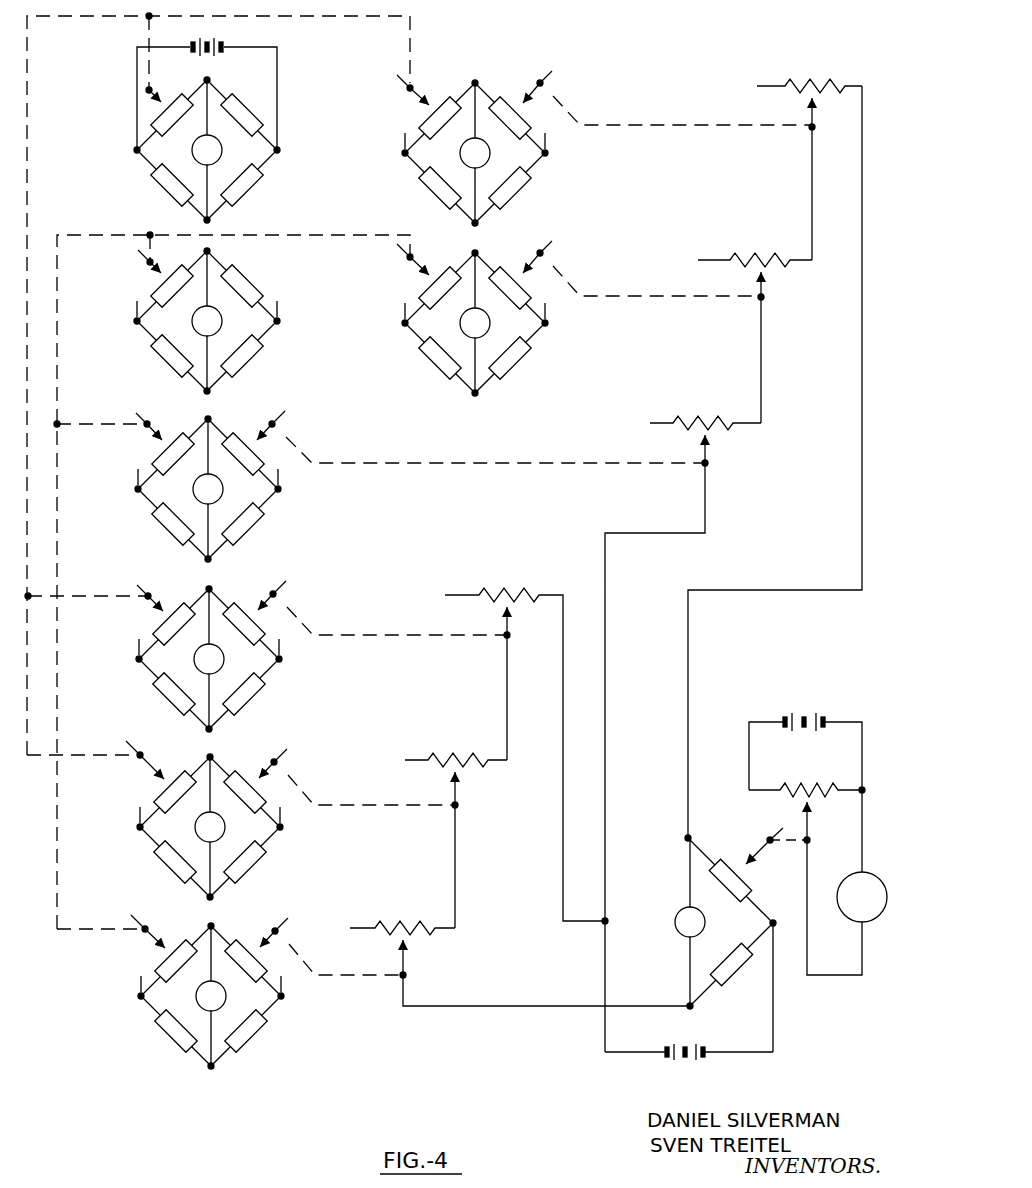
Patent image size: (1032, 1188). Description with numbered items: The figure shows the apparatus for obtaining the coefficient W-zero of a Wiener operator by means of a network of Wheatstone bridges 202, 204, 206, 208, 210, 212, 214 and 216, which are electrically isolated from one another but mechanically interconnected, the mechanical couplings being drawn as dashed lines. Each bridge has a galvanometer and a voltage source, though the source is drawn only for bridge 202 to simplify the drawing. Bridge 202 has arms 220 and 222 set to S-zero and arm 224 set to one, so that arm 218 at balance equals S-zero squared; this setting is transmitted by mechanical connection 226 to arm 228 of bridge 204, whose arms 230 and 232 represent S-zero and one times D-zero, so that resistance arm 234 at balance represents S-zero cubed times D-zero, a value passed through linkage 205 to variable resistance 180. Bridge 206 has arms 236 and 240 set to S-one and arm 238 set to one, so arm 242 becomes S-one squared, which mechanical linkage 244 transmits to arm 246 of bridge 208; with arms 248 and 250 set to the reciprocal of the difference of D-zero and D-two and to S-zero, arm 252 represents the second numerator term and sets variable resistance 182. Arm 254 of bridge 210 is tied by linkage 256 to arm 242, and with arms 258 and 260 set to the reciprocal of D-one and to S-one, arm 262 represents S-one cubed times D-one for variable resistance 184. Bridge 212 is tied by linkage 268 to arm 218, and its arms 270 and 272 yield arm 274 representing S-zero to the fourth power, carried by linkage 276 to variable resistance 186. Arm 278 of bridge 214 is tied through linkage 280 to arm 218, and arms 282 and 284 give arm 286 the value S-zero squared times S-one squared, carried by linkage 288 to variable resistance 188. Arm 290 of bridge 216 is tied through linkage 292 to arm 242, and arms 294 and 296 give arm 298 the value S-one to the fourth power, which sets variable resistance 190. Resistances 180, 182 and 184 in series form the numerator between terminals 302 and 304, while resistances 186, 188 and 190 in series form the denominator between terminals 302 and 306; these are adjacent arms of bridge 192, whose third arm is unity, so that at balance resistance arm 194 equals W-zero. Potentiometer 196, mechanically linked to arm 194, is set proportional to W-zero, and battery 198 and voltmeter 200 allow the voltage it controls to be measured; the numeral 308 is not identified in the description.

The variable resistance 180 is at (796, 92).
The variable resistance 182 is at (779, 263).
The variable resistance 184 is at (720, 428).
The variable resistance 186 is at (494, 603).
The variable resistance 188 is at (471, 766).
The variable resistance 190 is at (416, 934).
The Wheatstone bridge 192 is at (666, 938).
The resistance arm 194 is at (741, 868).
The potentiometer 196 is at (814, 785).
The battery 198 is at (810, 718).
The voltmeter 200 is at (878, 918).
The bridge 202 is at (199, 130).
The bridge 204 is at (479, 133).
The linkage 205 is at (678, 126).
The bridge 206 is at (193, 321).
The bridge 208 is at (491, 335).
The bridge 210 is at (190, 486).
The bridge 212 is at (200, 656).
The bridge 214 is at (199, 820).
The bridge 216 is at (200, 992).
The arm 218 is at (134, 115).
The arm 220 is at (137, 185).
The arm 222 is at (273, 114).
The arm 224 is at (274, 185).
The mechanical connection 226 is at (287, 18).
The arm 228 is at (400, 118).
The arm 230 is at (540, 187).
The arm 232 is at (415, 188).
The resistance arm 234 is at (553, 123).
The arm 236 is at (155, 359).
The arm 238 is at (267, 359).
The arm 240 is at (267, 280).
The arm 242 is at (139, 285).
The mechanical linkage 244 is at (372, 233).
The arm 246 is at (413, 286).
The arm 248 is at (418, 361).
The arm 250 is at (541, 357).
The arm 252 is at (553, 295).
The resistance arm 254 is at (137, 454).
The linkage 256 is at (100, 409).
The arm 258 is at (147, 524).
The arm 260 is at (266, 487).
The arm 262 is at (258, 452).
The mechanical linkage 268 is at (88, 579).
The arm 270 is at (145, 694).
The arm 272 is at (275, 658).
The arm 274 is at (259, 622).
The mechanical linkage 276 is at (478, 648).
The arm 278 is at (143, 792).
The linkage 280 is at (83, 743).
The arm 282 is at (153, 862).
The arm 284 is at (276, 827).
The arm 286 is at (260, 790).
The mechanical linkage 288 is at (368, 808).
The arm 290 is at (148, 961).
The linkage 292 is at (101, 914).
The arm 294 is at (152, 1031).
The arm 296 is at (276, 996).
The arm 298 is at (261, 960).
The terminal 302 is at (601, 923).
The terminal 304 is at (685, 838).
The terminal 306 is at (688, 1008).
The connection 308 is at (383, 934).